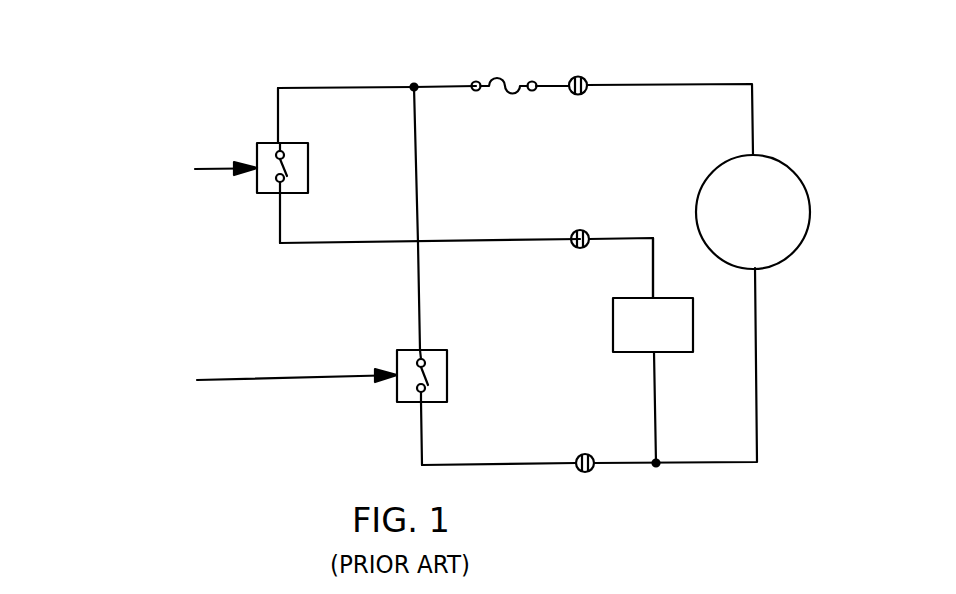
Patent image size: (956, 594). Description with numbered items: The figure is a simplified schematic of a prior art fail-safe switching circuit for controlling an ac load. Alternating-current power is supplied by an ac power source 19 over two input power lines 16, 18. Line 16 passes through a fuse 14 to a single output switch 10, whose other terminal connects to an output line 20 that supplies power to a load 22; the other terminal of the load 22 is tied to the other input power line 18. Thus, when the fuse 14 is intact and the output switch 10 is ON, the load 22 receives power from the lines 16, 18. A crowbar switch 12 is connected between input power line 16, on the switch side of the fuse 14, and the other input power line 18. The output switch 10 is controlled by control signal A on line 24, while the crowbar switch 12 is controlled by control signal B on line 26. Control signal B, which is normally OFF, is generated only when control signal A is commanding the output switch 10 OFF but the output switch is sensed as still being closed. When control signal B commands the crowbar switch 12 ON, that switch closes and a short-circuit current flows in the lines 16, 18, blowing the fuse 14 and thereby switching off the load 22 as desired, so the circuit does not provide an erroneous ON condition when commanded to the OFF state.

The output switch 10 is at (330, 189).
The crowbar switch 12 is at (479, 400).
The fuse 14 is at (510, 61).
The input power line 16 is at (583, 94).
The input power line 18 is at (591, 390).
The ac power source 19 is at (757, 236).
The output line 20 is at (466, 245).
The load 22 is at (668, 380).
The control signal A line 24 is at (153, 189).
The control signal B line 26 is at (224, 399).